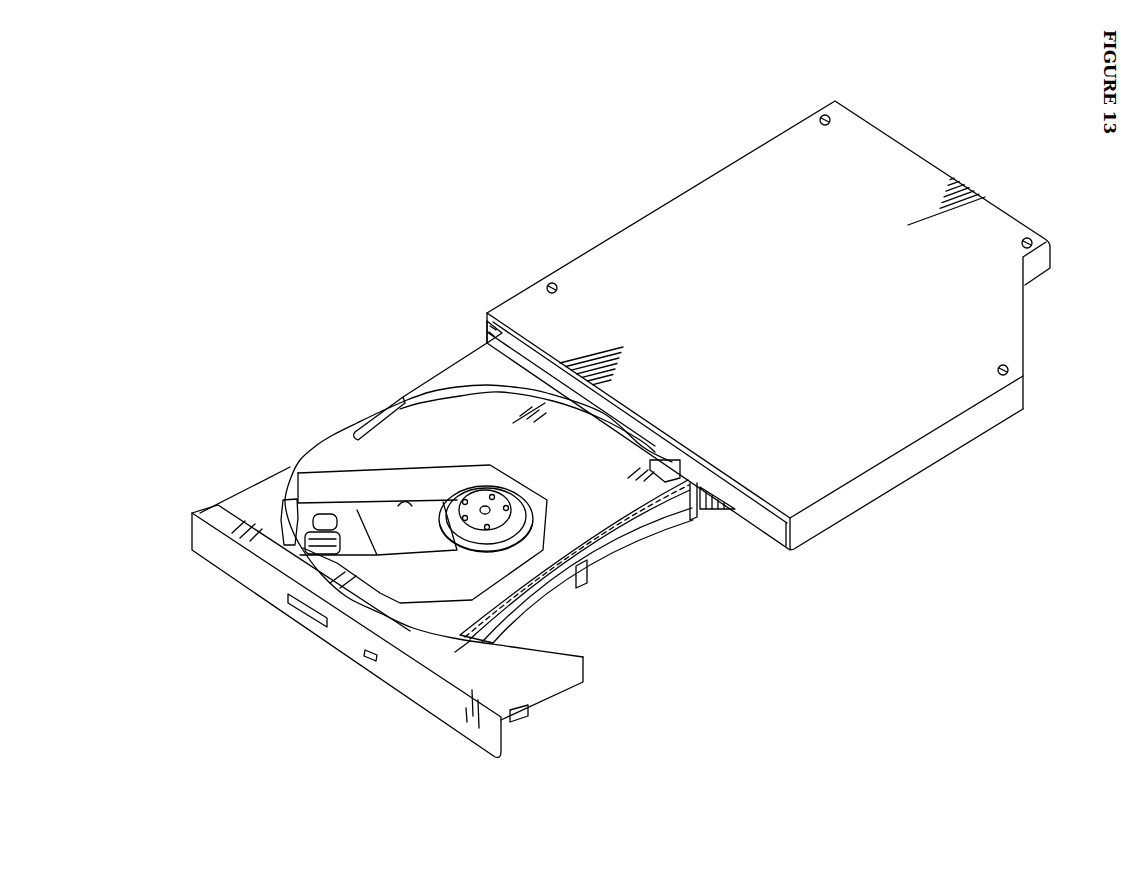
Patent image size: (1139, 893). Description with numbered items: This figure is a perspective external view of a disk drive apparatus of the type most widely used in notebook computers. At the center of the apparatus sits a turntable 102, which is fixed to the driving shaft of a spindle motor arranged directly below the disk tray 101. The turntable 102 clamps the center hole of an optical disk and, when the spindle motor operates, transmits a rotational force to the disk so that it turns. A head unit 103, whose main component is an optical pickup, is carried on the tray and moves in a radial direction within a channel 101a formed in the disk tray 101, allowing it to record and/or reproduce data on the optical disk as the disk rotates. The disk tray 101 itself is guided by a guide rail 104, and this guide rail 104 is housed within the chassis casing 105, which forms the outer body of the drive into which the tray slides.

The disk tray 101 is at (362, 455).
The channel 101a is at (421, 503).
The turntable 102 is at (513, 493).
The head unit 103 is at (290, 517).
The guide rail 104 is at (383, 410).
The chassis casing 105 is at (614, 234).